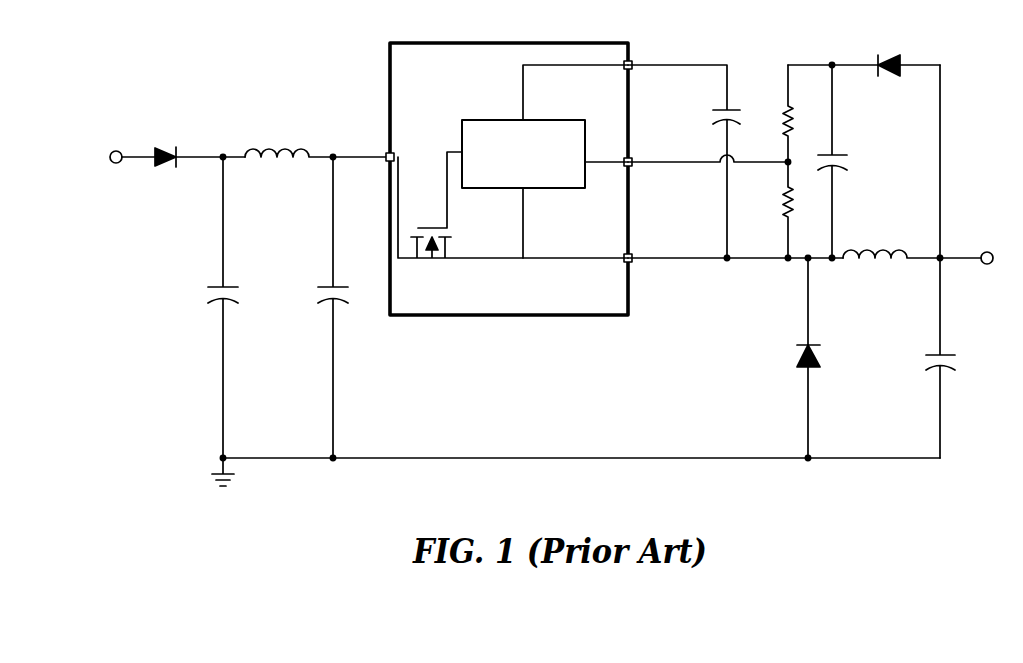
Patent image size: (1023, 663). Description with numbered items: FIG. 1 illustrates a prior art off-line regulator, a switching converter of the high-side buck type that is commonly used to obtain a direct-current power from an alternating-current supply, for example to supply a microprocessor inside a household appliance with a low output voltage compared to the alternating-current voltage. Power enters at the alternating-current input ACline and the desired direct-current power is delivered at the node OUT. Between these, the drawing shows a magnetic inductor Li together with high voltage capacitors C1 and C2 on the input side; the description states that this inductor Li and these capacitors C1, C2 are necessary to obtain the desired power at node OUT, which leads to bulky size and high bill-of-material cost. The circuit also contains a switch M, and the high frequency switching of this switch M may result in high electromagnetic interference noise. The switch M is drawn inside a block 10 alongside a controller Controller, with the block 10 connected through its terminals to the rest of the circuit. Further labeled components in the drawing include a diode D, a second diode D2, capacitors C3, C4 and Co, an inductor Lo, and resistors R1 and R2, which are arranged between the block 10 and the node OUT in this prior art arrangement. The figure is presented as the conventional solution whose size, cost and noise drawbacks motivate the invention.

The power converter integrated circuit 10 is at (629, 43).
The diode D is at (547, 98).
The diode D2 is at (825, 356).
The high voltage capacitor C1 is at (237, 307).
The high voltage capacitor C2 is at (346, 307).
The compensation capacitor C3 is at (684, 161).
The capacitor C4 is at (844, 161).
The output capacitor Co is at (953, 358).
The magnetic inductor Li is at (305, 138).
The output inductor Lo is at (912, 241).
The feedback resistor R1 is at (770, 113).
The feedback resistor R2 is at (770, 211).
The switch M is at (513, 207).
The controller Controller is at (523, 161).
The AC line ACline is at (114, 175).
The node OUT is at (991, 245).